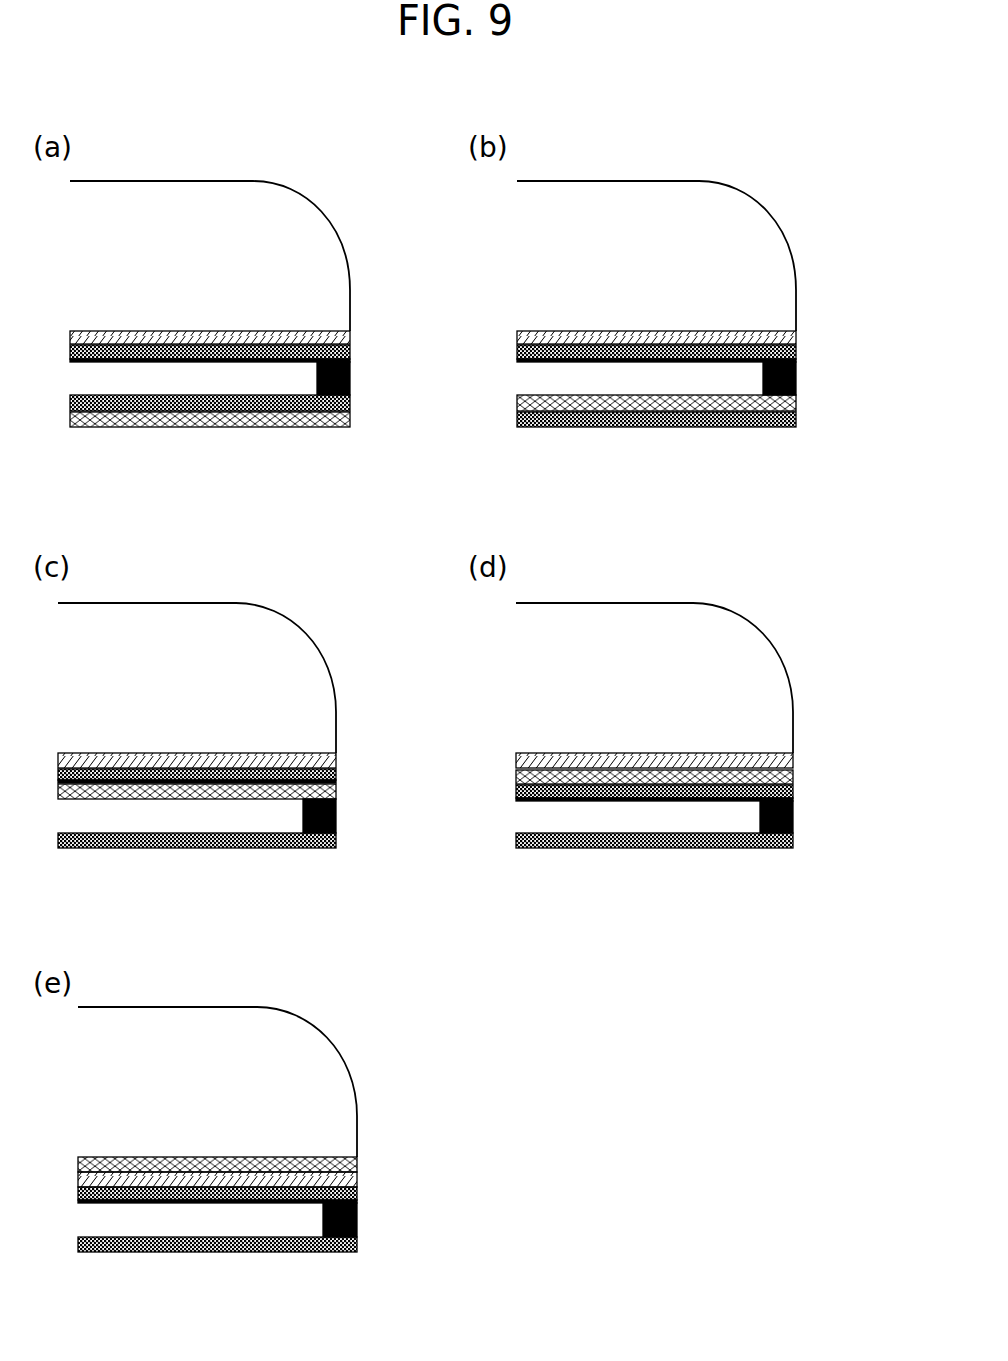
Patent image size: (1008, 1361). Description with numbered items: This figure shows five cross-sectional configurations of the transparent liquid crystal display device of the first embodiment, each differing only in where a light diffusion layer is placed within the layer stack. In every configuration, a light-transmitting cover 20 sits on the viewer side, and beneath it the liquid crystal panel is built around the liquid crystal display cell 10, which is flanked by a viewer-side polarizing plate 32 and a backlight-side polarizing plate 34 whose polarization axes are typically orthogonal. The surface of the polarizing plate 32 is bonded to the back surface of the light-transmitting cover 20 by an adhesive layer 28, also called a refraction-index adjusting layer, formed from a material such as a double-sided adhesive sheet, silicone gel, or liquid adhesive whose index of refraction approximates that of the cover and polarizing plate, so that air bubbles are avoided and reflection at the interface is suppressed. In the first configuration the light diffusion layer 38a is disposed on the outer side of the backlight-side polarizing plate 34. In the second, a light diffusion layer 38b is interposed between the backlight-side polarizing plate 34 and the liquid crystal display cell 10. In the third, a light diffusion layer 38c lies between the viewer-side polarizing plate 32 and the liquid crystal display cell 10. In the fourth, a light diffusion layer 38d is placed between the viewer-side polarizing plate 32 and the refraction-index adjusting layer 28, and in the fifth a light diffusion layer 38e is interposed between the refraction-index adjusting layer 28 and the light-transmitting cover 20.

The liquid crystal display cell 10 is at (476, 813).
The light-transmitting cover 20 is at (318, 227).
The adhesive layer (refraction-index adjusting layer) 28 is at (350, 341).
The viewer-side polarizing plate 32 is at (350, 352).
The backlight-side polarizing plate 34 is at (350, 396).
The light diffusion layer 38a is at (350, 418).
The light diffusion layer 38b is at (796, 397).
The light diffusion layer 38c is at (336, 792).
The light diffusion layer 38d is at (793, 775).
The light diffusion layer 38e is at (357, 1160).